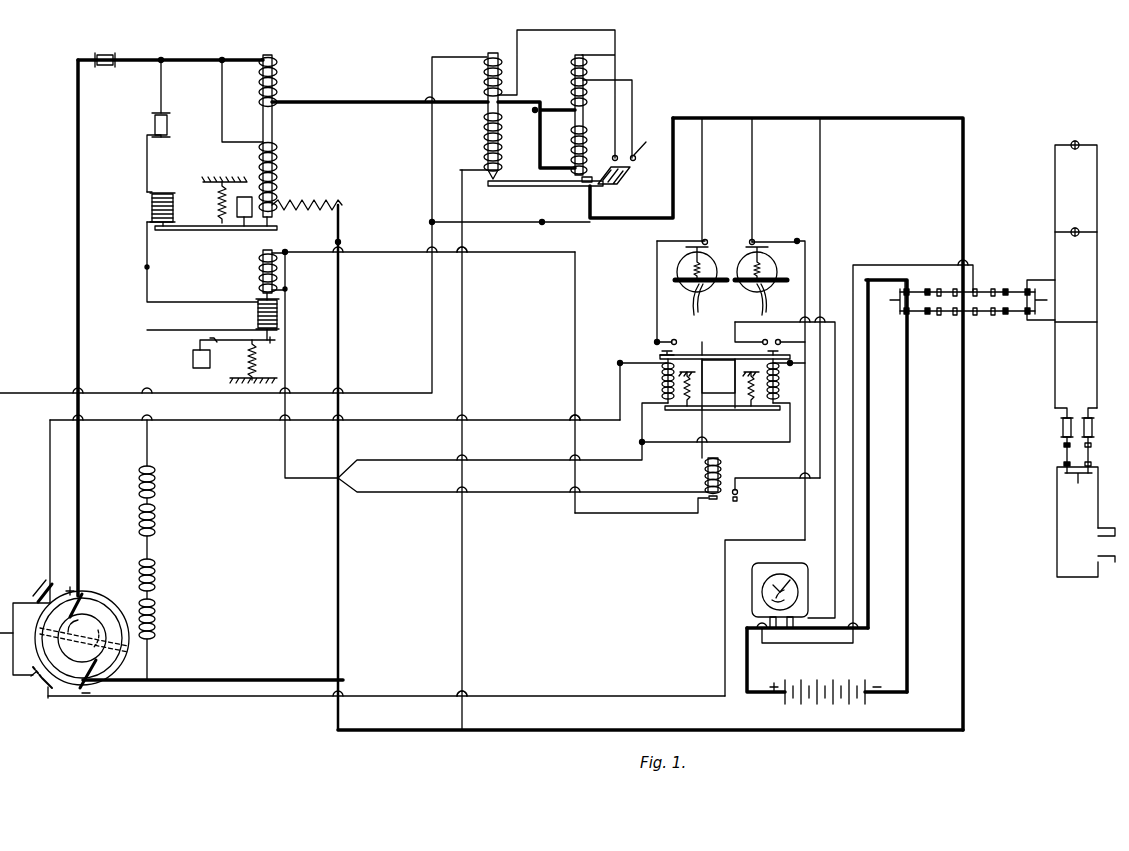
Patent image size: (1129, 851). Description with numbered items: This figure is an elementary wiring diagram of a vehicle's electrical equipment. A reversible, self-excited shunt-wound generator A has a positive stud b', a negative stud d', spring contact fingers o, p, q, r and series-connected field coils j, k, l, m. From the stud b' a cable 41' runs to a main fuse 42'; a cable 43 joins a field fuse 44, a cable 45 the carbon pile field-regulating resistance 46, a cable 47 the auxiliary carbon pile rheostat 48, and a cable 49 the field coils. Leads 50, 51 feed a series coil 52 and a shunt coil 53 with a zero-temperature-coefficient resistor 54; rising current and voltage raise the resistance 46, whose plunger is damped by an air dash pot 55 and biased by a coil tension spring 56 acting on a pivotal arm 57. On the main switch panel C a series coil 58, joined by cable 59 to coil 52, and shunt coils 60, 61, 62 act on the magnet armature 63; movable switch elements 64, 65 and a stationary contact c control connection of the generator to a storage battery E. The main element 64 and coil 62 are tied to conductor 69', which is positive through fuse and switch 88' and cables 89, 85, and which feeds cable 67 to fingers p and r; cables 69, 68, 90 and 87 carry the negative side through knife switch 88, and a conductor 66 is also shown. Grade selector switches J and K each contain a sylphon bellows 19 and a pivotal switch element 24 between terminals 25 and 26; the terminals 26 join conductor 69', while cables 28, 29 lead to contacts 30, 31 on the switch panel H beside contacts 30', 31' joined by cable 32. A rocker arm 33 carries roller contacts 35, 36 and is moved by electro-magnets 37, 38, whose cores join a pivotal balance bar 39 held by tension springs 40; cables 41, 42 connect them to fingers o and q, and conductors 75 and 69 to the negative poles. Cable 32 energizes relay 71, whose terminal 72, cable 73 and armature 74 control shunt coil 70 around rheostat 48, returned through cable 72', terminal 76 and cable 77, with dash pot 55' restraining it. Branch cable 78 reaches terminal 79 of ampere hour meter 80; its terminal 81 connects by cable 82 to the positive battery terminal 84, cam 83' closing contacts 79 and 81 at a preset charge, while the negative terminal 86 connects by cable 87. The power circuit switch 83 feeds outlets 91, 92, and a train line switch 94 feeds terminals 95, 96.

The sylphon bellows 19 is at (718, 278).
The pivotal switch element 24 is at (746, 246).
The lower electric terminal 25 is at (705, 242).
The upper terminal 26 is at (752, 242).
The cable 28 is at (657, 322).
The cable 29 is at (805, 303).
The contact 30 is at (641, 341).
The contact 30' is at (680, 333).
The contact 31 is at (791, 333).
The contact 31' is at (751, 335).
The cable 32 is at (702, 425).
The rocker arm 33 is at (715, 355).
The roller contact 35 is at (658, 355).
The roller contact 36 is at (788, 356).
The electro-magnet 37 is at (662, 387).
The electro-magnet 38 is at (779, 385).
The pivotal balance bar 39 is at (757, 402).
The tension springs 40 is at (694, 404).
The cable 41 is at (335, 390).
The cable 41' is at (98, 328).
The cable 42 is at (386, 705).
The main fuse 42' is at (108, 78).
The cable 43 is at (161, 90).
The field fuse 44 is at (167, 124).
The cable 45 is at (147, 163).
The carbon pile field-regulating resistance 46 is at (172, 200).
The cable 47 is at (147, 285).
The auxiliary carbon pile rheostat 48 is at (258, 316).
The cable 49 is at (147, 366).
The cable lead 50 is at (222, 60).
The cable lead 51 is at (222, 84).
The series coil 52 is at (276, 87).
The shunt coil 53 is at (274, 169).
The zero temperature co-efficient resistor 54 is at (305, 198).
The air dash pot 55 is at (253, 222).
The dash pot 55' is at (247, 361).
The coil tension spring 56 is at (218, 218).
The pivotal arm 57 is at (182, 228).
The series coil 58 is at (586, 140).
The cable 59 is at (373, 102).
The shunt coil 60 is at (572, 72).
The shunt coil 61 is at (484, 140).
The shunt coil 62 is at (484, 79).
The magnet armature 63 is at (515, 186).
The main movable switch element 64 is at (606, 188).
The movable switch element 65 is at (624, 180).
The conductor 66 is at (558, 30).
The cable 67 is at (19, 393).
The cable 68 is at (238, 678).
The cable 69 is at (359, 467).
The conductor 69' is at (624, 411).
The shunt coil 70 is at (276, 271).
The relay 71 is at (708, 475).
The terminal 72 is at (523, 500).
The cable 72' is at (311, 365).
The cable 73 is at (575, 330).
The armature 74 is at (728, 498).
The conductor 75 is at (531, 460).
The terminal 76 is at (751, 494).
The cable 77 is at (820, 242).
The branch cable 78 is at (759, 300).
The terminal 79 is at (793, 578).
The ampere hour meter 80 is at (802, 566).
The terminal 81 is at (762, 594).
The cable 82 is at (823, 645).
The power circuit switch 83 is at (1029, 312).
The cam 83' is at (786, 570).
The positive terminal 84 is at (773, 696).
The cable 85 is at (747, 665).
The negative terminal 86 is at (882, 696).
The cable 87 is at (908, 560).
The knife switch 88 is at (968, 312).
The fuse and switch 88' is at (939, 266).
The cable 89 is at (868, 345).
The cable 90 is at (540, 730).
The outlet 91 is at (1075, 228).
The outlet 92 is at (1075, 141).
The train line switch 94 is at (1064, 447).
The terminal 95 is at (1100, 530).
The terminal 96 is at (1100, 555).
The generator A is at (82, 638).
The main switch panel C is at (657, 73).
The stationary contact c is at (614, 120).
The storage battery E is at (830, 710).
The switch panel H is at (718, 376).
The grade selector switch J is at (676, 274).
The grade selector switch K is at (778, 272).
The field coil j is at (155, 615).
The field coil k is at (155, 575).
The field coil l is at (155, 523).
The field coil m is at (155, 488).
The stud b' is at (64, 600).
The stud d' is at (109, 685).
The spring contact finger o is at (50, 583).
The spring contact finger p is at (32, 596).
The spring contact finger q is at (48, 690).
The spring contact finger r is at (34, 680).